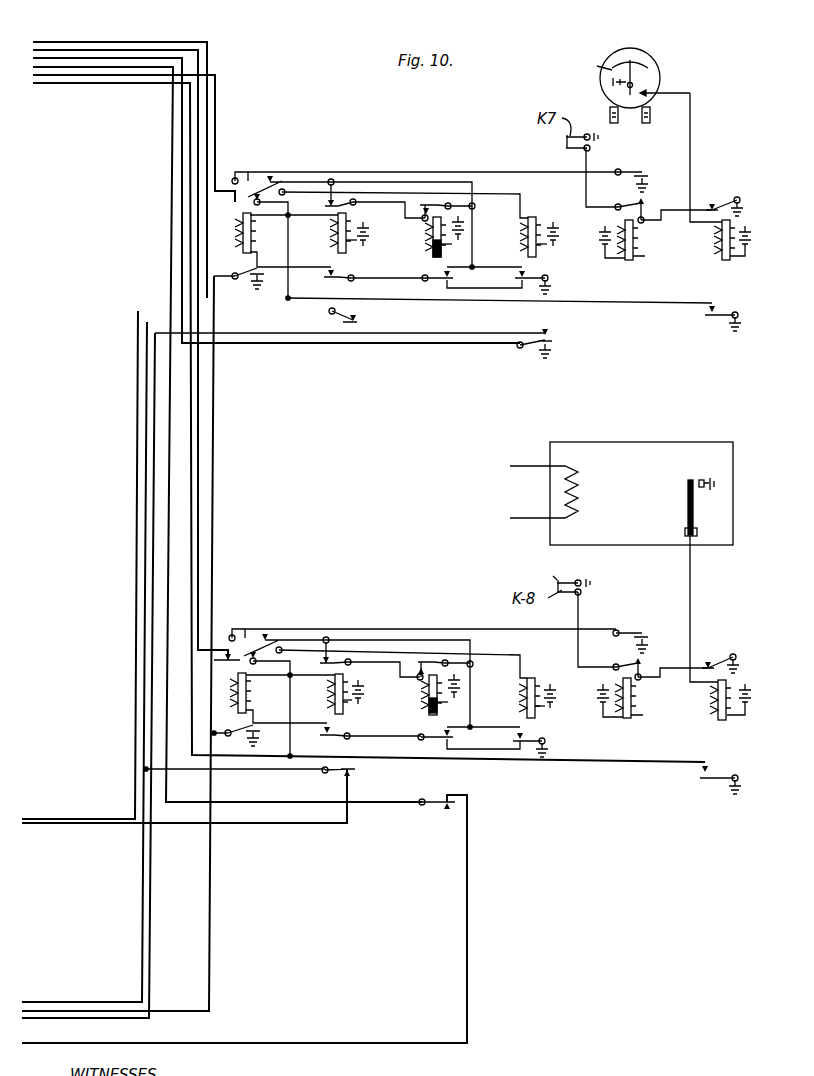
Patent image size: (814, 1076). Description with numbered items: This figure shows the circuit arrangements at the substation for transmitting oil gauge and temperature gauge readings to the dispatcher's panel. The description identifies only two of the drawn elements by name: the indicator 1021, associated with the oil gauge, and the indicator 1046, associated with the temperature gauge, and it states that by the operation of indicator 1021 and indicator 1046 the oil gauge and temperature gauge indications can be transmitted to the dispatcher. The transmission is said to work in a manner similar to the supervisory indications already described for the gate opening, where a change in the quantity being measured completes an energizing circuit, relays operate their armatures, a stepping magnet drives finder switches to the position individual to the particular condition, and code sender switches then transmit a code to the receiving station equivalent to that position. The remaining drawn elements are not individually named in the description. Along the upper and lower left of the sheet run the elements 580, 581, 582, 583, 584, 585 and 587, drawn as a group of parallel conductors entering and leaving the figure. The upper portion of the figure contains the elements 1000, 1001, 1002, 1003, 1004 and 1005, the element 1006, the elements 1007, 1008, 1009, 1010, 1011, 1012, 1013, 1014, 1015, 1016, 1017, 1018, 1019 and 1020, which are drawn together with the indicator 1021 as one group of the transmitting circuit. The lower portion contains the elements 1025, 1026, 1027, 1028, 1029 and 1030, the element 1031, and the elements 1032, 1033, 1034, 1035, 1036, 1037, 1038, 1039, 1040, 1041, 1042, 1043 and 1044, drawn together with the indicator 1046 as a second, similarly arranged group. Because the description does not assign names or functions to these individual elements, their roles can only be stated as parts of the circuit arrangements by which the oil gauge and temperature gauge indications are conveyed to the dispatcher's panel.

The conductor 580 is at (56, 48).
The conductor 581 is at (84, 50).
The conductor 582 is at (116, 58).
The conductor 583 is at (86, 80).
The conductor 584 is at (110, 80).
The conductor 585 is at (138, 85).
The conductor 587 is at (48, 1048).
The relay 1000 is at (258, 234).
The relay 1001 is at (349, 232).
The slow-release relay 1002 is at (432, 244).
The relay 1003 is at (521, 237).
The relay 1004 is at (645, 258).
The relay 1005 is at (722, 254).
The indicator lamp 1006 is at (650, 70).
The contact 1007 is at (241, 176).
The contact 1008 is at (268, 186).
The contact 1009 is at (252, 278).
The contact 1010 is at (350, 210).
The contact 1011 is at (351, 280).
The contact 1012 is at (362, 318).
The contact 1013 is at (440, 205).
The contact 1014 is at (436, 282).
The contact 1015 is at (540, 278).
The contact 1016 is at (538, 340).
The contact 1017 is at (634, 172).
The contact 1018 is at (632, 210).
The contact 1019 is at (722, 202).
The contact 1020 is at (733, 314).
The indicator 1021 is at (582, 65).
The relay 1025 is at (247, 688).
The relay 1026 is at (346, 692).
The slow-release relay 1027 is at (428, 704).
The relay 1028 is at (520, 700).
The relay 1029 is at (612, 696).
The relay 1030 is at (718, 702).
The heater unit 1031 is at (637, 500).
The contact 1032 is at (251, 632).
The contact 1033 is at (262, 648).
The contact 1034 is at (250, 735).
The contact 1035 is at (345, 668).
The contact 1036 is at (342, 734).
The contact 1037 is at (340, 762).
The contact 1038 is at (437, 660).
The contact 1039 is at (430, 749).
The contact 1040 is at (432, 806).
The contact 1041 is at (542, 743).
The contact 1042 is at (626, 633).
The contact 1043 is at (630, 666).
The contact 1044 is at (718, 660).
The indicator 1046 is at (686, 510).